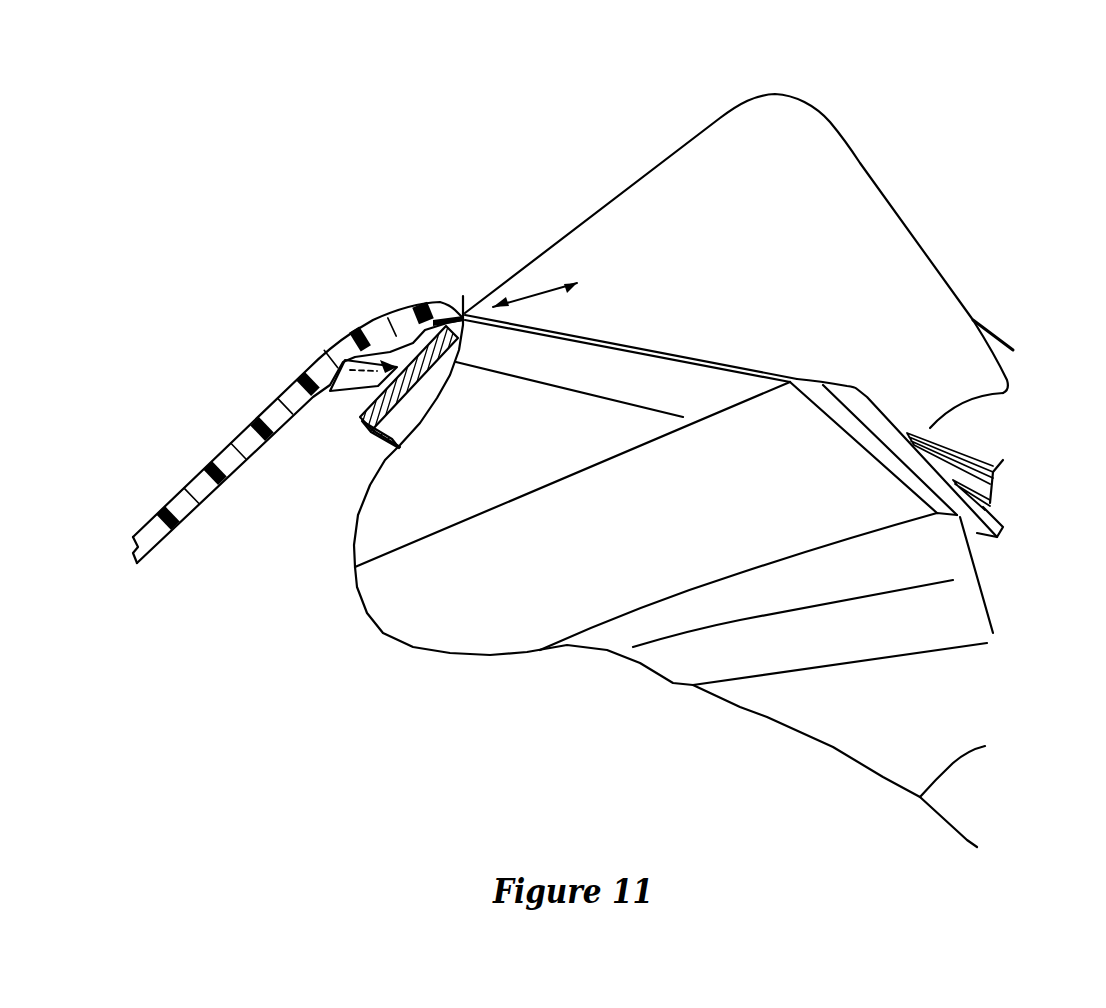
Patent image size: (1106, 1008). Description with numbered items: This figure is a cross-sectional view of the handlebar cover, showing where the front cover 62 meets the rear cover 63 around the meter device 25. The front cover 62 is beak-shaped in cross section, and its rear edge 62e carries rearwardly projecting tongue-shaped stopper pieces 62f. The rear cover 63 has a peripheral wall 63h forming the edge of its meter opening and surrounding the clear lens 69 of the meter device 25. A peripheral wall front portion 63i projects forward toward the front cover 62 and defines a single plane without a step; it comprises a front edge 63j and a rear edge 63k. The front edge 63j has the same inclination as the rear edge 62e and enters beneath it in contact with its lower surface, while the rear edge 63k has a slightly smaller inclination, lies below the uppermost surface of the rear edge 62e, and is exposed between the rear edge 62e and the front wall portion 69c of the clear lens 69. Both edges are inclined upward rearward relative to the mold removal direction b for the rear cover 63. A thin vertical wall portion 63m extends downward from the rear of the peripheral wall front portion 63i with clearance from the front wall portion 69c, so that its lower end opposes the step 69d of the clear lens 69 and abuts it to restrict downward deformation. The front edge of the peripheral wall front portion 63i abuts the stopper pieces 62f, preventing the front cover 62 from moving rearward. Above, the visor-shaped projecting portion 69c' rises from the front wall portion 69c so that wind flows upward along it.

The meter device 25 is at (702, 106).
The front cover 62 is at (221, 440).
The rear edge of the front cover 62e is at (373, 320).
The stopper pieces 62f is at (360, 372).
The rear cover 63 is at (908, 410).
The peripheral wall 63h is at (853, 388).
The peripheral wall front portion 63i is at (480, 217).
The front edge 63j is at (410, 320).
The rear edge 63k is at (443, 317).
The vertical wall portion 63m is at (462, 343).
The clear lens 69 is at (641, 170).
The front wall portion 69c is at (532, 233).
The projecting portion 69c' is at (801, 62).
The step 69d is at (452, 367).
The mold removal direction b is at (537, 296).